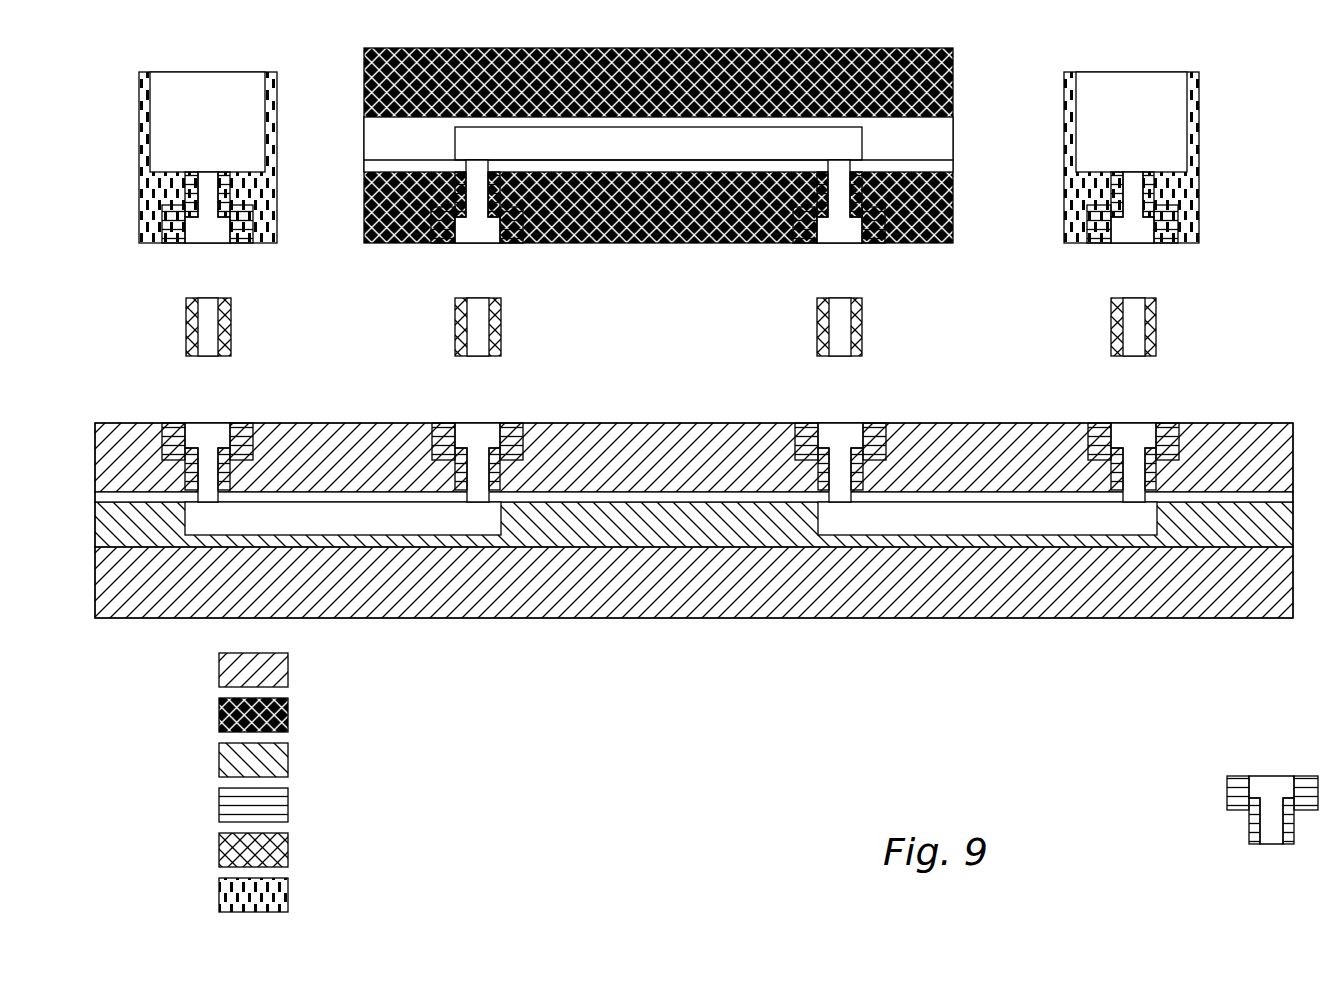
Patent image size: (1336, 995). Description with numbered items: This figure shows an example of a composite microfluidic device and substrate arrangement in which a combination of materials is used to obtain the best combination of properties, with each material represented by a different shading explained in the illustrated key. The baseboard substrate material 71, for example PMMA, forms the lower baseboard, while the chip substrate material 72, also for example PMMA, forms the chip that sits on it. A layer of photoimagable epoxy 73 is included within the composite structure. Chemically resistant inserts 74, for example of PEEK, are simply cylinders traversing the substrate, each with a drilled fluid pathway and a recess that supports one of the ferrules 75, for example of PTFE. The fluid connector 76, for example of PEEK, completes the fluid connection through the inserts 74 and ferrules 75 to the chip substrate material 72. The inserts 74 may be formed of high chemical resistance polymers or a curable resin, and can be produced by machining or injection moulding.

The baseboard substrate material 71 is at (288, 675).
The chip substrate material 72 is at (288, 720).
The photoimagable epoxy 73 is at (288, 765).
The chemically resistant inserts 74 is at (288, 810).
The ferrules 75 is at (288, 855).
The fluid connector 76 is at (288, 900).